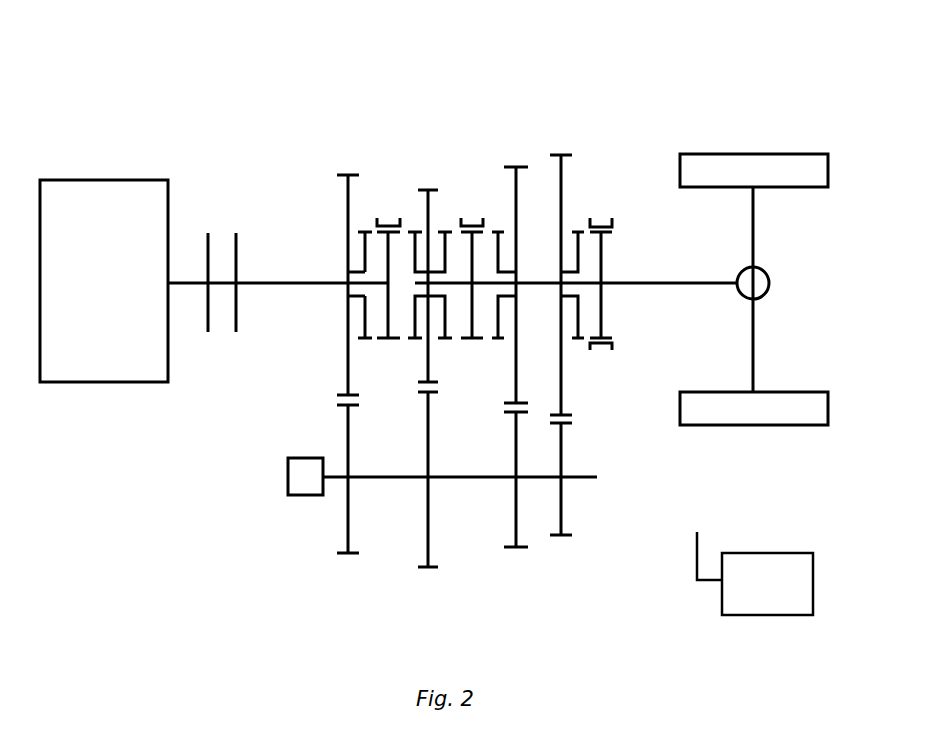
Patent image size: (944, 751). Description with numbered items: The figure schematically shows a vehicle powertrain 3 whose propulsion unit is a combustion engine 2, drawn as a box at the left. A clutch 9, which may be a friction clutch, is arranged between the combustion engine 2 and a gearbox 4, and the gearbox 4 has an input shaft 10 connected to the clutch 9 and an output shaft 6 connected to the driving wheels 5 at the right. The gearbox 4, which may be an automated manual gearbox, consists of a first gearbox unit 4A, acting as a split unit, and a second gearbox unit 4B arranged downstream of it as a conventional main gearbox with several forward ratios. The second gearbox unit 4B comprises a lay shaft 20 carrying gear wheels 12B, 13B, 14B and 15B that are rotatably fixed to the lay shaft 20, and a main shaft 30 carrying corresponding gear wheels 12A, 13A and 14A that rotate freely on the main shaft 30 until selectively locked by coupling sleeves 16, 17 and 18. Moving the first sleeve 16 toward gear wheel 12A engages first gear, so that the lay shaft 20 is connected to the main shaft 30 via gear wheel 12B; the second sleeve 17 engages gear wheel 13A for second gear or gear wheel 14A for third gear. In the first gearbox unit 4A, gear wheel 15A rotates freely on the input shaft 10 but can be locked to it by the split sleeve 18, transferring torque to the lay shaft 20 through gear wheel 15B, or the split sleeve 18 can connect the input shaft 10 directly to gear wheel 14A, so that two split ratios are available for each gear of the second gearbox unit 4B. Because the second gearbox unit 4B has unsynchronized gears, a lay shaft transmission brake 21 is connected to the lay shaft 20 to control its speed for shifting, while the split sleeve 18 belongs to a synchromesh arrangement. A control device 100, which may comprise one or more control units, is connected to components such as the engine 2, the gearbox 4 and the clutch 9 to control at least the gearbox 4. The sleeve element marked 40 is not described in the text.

The combustion engine 2 is at (98, 383).
The vehicle powertrain 3 is at (668, 83).
The gearbox 4 is at (242, 480).
The first gearbox unit 4A is at (332, 100).
The second gearbox unit 4B is at (432, 100).
The driving wheels 5 is at (753, 475).
The output shaft 6 is at (716, 280).
The clutch 9 is at (236, 332).
The input shaft 10 is at (208, 259).
The gear wheel 12A is at (563, 190).
The gear wheel 12B is at (561, 495).
The gear wheel 13A is at (515, 210).
The gear wheel 13B is at (516, 512).
The gear wheel 14A is at (425, 198).
The gear wheel 14B is at (428, 535).
The gear wheel 15A is at (348, 232).
The gear wheel 15B is at (348, 523).
The first sleeve 16 is at (607, 227).
The second sleeve 17 is at (461, 347).
The split sleeve 18 is at (377, 347).
The lay shaft 20 is at (452, 477).
The lay shaft transmission brake 21 is at (295, 497).
The main shaft 30 is at (545, 283).
The shifting sleeve 40 is at (388, 202).
The control device 100 is at (755, 573).